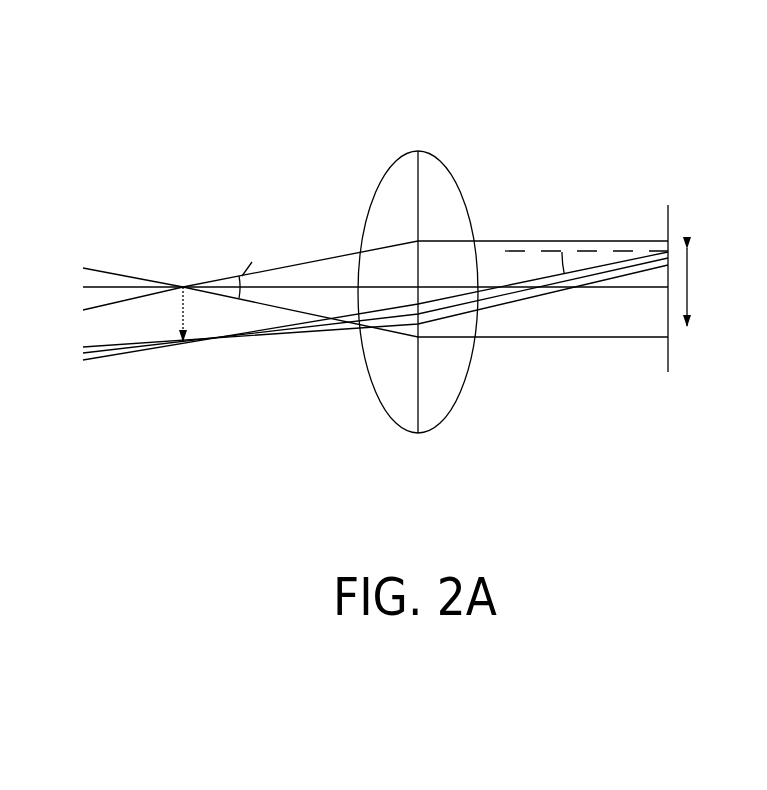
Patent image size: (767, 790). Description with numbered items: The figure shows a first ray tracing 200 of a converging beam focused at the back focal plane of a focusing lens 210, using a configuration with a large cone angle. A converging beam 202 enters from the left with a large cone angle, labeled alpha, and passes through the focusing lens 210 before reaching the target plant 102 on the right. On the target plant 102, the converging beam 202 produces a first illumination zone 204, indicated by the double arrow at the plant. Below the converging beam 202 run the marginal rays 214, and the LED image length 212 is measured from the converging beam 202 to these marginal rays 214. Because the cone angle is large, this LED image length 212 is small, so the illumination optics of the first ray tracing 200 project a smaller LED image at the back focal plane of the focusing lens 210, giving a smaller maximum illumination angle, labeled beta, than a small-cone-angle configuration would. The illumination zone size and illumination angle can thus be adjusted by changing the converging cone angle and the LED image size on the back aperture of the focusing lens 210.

The first ray tracing 200 is at (644, 44).
The converging beam 202 is at (144, 246).
The focusing lens 210 is at (418, 150).
The target plant 102 is at (668, 212).
The first illumination zone 204 is at (687, 268).
The LED image length 212 is at (185, 312).
The marginal rays 214 is at (139, 374).